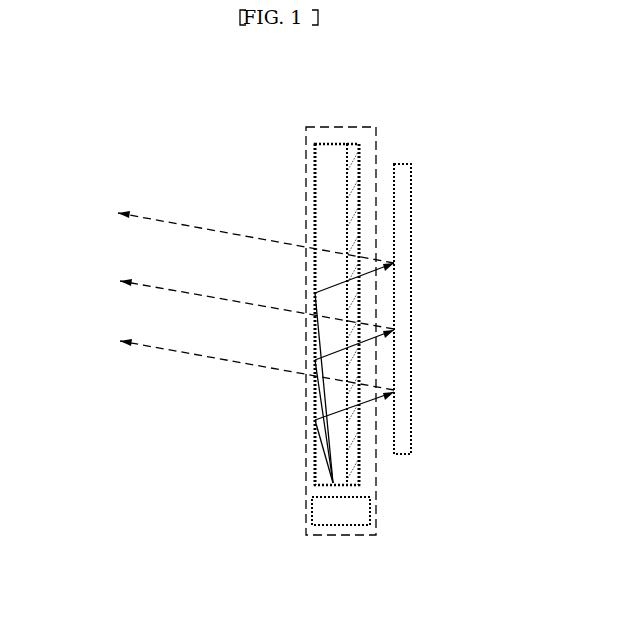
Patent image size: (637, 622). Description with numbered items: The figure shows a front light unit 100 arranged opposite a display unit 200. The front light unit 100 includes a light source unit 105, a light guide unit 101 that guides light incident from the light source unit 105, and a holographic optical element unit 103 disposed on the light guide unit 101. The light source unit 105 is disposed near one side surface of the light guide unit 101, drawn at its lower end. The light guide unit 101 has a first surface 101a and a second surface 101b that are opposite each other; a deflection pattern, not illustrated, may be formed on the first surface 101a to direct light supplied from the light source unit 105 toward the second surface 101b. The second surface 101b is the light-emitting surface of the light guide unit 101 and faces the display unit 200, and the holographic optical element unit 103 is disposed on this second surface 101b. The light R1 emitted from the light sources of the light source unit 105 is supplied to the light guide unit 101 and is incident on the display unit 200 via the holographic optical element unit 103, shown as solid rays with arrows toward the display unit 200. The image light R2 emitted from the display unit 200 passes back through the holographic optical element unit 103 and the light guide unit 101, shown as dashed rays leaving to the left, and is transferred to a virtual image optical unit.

The front light unit 100 is at (338, 127).
The light guide unit 101 is at (323, 172).
The first surface 101a is at (315, 236).
The second surface 101b is at (361, 199).
The holographic optical element unit 103 is at (361, 151).
The light source unit 105 is at (345, 522).
The display unit 200 is at (413, 446).
The light R1 is at (378, 270).
The image light R2 is at (157, 220).